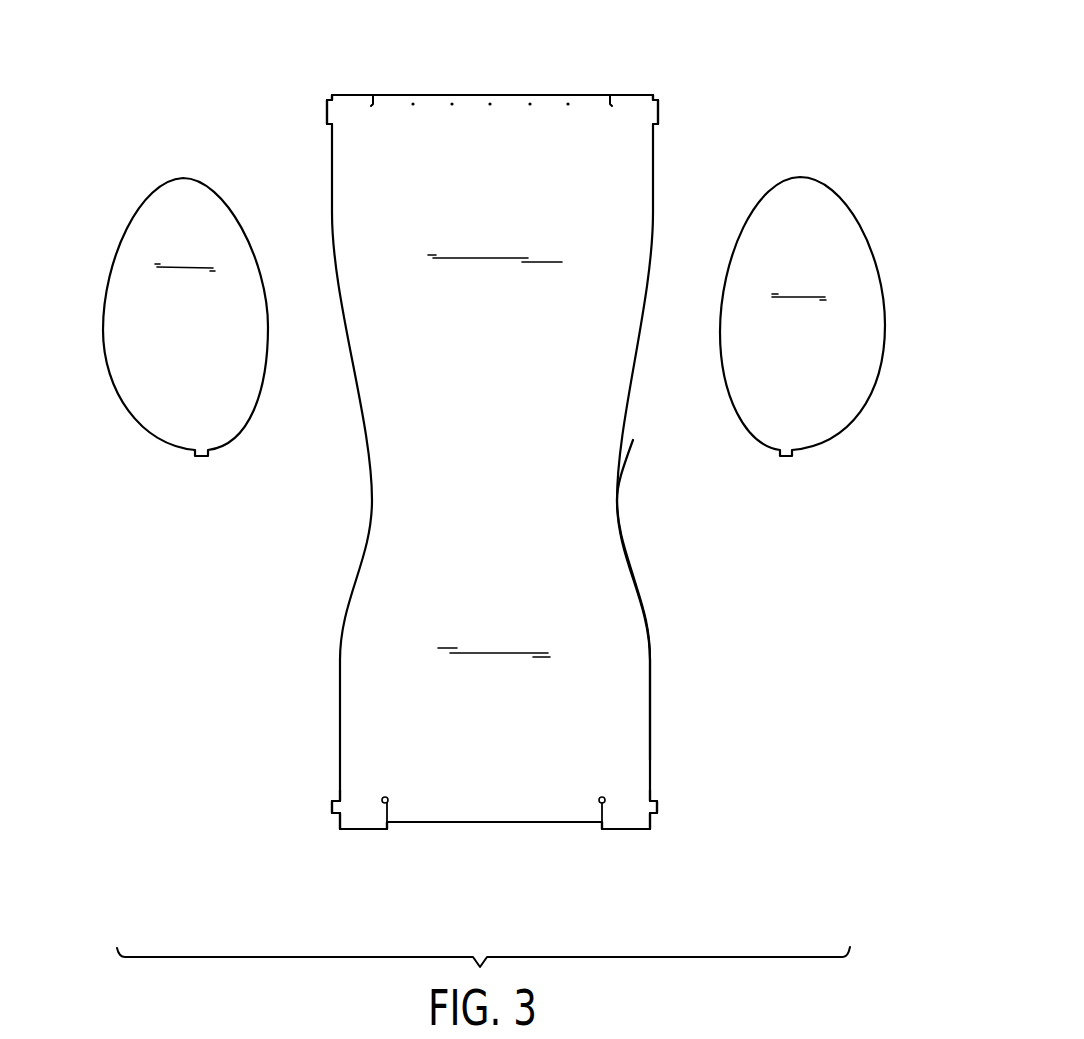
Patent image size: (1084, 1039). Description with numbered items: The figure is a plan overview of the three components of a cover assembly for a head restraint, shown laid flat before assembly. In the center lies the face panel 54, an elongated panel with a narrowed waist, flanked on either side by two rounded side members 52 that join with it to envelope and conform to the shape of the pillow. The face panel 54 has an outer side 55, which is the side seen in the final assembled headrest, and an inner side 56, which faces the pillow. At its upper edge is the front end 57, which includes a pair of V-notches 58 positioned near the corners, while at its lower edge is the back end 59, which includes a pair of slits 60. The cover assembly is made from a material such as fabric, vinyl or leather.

The side members 52 is at (110, 397).
The face panel 54 is at (627, 542).
The outer side 55 is at (660, 708).
The inner side 56 is at (498, 557).
The front end 57 is at (673, 108).
The V-notches 58 is at (373, 88).
The back end 59 is at (680, 822).
The slits 60 is at (395, 832).